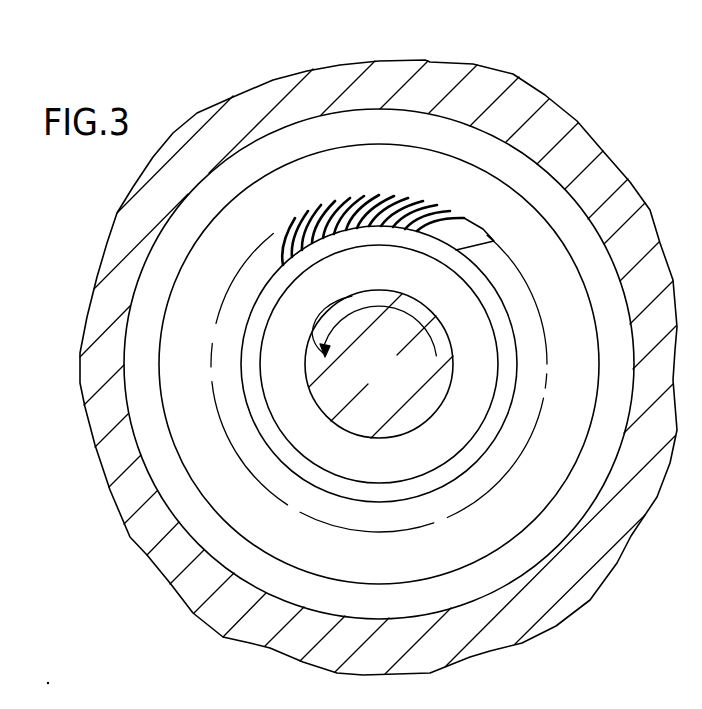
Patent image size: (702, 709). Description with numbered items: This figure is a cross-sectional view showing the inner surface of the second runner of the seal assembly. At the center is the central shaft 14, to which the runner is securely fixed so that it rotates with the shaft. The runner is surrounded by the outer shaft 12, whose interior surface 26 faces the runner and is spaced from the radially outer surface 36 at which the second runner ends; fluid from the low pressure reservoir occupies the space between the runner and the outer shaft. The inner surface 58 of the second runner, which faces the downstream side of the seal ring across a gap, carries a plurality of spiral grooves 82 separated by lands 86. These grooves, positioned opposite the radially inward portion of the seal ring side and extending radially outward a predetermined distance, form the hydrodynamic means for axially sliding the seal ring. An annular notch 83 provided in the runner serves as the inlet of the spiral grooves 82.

The outer shaft 12 is at (512, 97).
The central shaft 14 is at (391, 380).
The interior surface of outer shaft 26 is at (241, 151).
The radially outer surface of second runner 36 is at (242, 189).
The inner surface of second runner 58 is at (197, 348).
The spiral grooves 82 is at (417, 198).
The annular notch 83 is at (263, 316).
The lands 86 is at (483, 223).